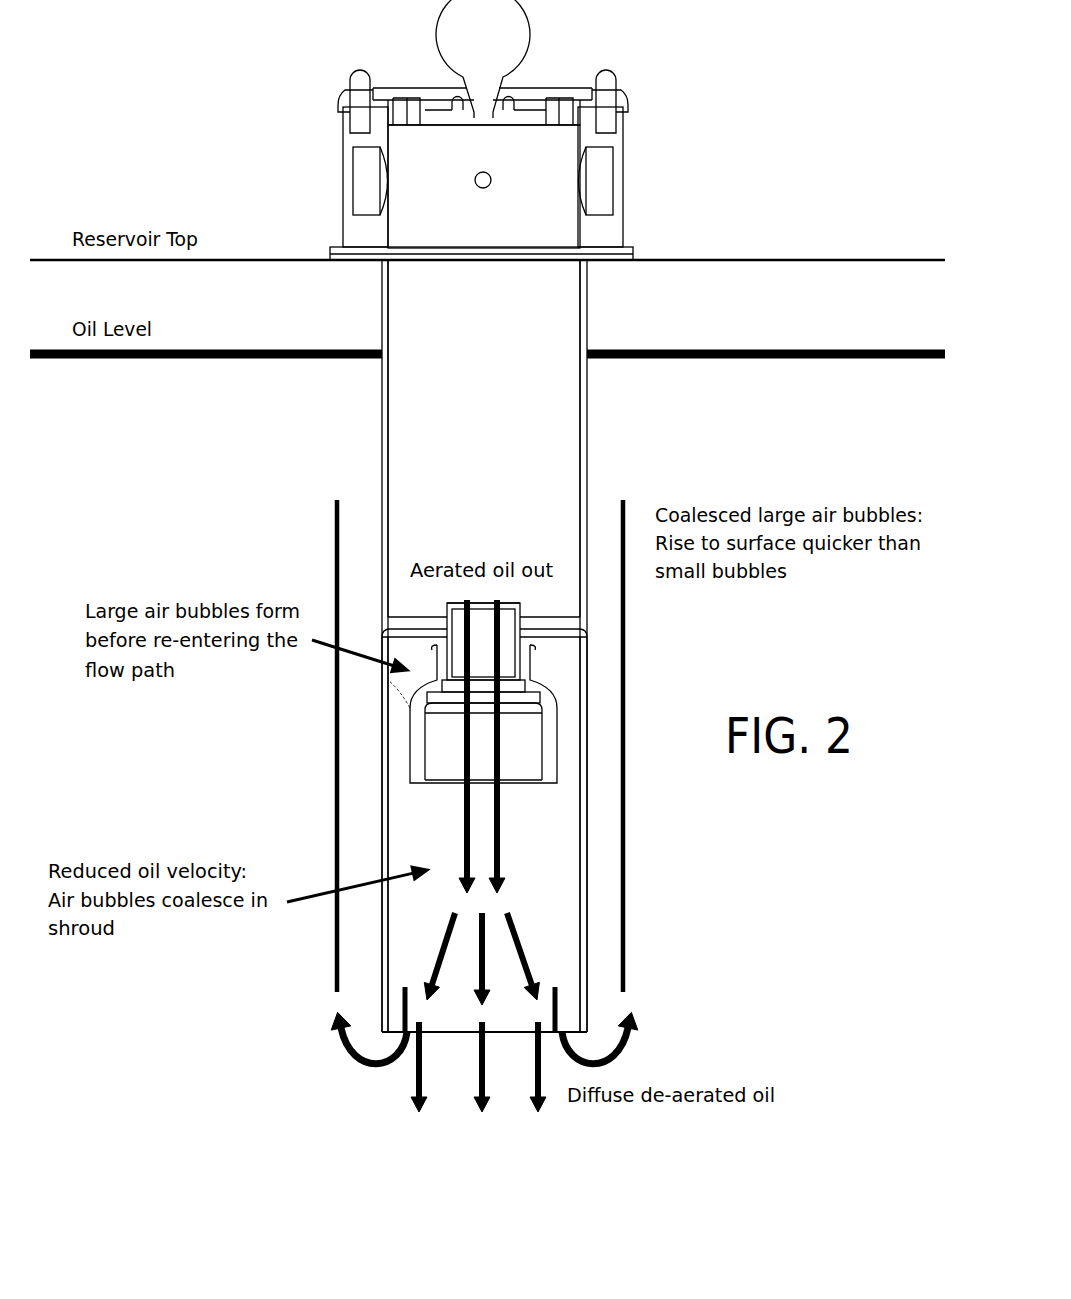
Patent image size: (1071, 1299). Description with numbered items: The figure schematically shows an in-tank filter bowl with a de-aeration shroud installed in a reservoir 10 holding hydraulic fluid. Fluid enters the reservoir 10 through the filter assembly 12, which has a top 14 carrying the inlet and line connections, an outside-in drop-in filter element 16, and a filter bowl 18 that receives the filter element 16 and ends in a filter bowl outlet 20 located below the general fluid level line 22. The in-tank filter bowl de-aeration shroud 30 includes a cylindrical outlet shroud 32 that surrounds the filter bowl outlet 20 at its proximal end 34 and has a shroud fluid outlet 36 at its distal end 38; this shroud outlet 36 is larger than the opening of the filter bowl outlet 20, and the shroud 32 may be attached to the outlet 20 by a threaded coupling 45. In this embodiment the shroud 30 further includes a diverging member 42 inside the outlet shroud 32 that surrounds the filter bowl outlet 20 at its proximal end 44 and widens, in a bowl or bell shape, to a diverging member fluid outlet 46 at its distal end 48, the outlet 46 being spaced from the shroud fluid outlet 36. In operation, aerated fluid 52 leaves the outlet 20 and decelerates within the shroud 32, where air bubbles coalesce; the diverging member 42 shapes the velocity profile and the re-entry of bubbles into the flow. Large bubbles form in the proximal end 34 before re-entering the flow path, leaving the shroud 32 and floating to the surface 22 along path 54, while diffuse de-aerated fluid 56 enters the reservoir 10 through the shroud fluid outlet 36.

The reservoir 10 is at (800, 258).
The filter assembly 12 is at (528, 130).
The top 14 is at (453, 168).
The filter element 16 is at (497, 358).
The filter bowl 18 is at (588, 300).
The filter bowl outlet 20 is at (522, 612).
The fluid level line 22 is at (742, 350).
The in-tank filter bowl de-aeration shroud 30 is at (688, 660).
The cylindrical outlet shroud 32 is at (588, 785).
The proximal end 34 is at (588, 642).
The shroud fluid outlet 36 is at (450, 1035).
The distal end 38 is at (590, 1025).
The diverging member 42 is at (553, 737).
The proximal end 44 is at (430, 682).
The threaded coupling 45 is at (420, 662).
The diverging member fluid outlet 46 is at (507, 790).
The distal end 48 is at (410, 770).
The aerated fluid 52 is at (452, 612).
The path 54 is at (628, 900).
The diffuse de-aerated fluid 56 is at (487, 1093).